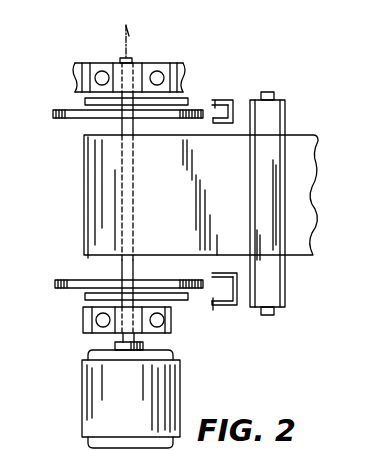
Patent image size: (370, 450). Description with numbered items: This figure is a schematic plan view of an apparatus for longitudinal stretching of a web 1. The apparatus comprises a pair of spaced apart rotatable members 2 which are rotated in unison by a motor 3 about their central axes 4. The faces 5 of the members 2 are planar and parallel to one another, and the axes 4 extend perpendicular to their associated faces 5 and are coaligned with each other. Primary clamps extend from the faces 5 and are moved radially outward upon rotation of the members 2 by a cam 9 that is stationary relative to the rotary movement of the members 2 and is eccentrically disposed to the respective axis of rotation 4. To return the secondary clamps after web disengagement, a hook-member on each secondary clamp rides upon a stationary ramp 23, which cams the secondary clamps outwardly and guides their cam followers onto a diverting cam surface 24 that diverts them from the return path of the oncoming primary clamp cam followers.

The web 1 is at (297, 153).
The rotatable members 2 is at (63, 98).
The motor 3 is at (126, 412).
The central axes 4 is at (129, 36).
The faces 5 is at (68, 118).
The cam 9 is at (178, 100).
The stationary ramp 23 is at (217, 88).
The diverting cam surface 24 is at (230, 115).